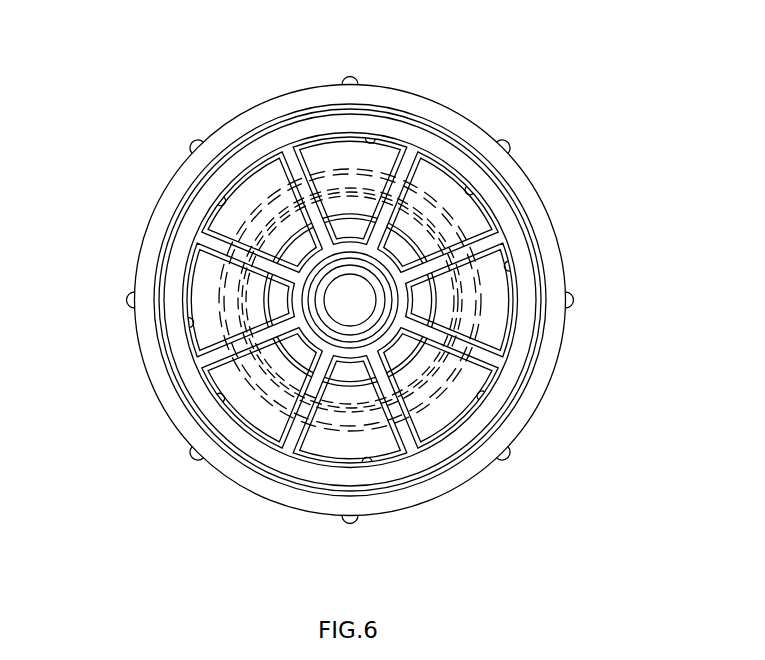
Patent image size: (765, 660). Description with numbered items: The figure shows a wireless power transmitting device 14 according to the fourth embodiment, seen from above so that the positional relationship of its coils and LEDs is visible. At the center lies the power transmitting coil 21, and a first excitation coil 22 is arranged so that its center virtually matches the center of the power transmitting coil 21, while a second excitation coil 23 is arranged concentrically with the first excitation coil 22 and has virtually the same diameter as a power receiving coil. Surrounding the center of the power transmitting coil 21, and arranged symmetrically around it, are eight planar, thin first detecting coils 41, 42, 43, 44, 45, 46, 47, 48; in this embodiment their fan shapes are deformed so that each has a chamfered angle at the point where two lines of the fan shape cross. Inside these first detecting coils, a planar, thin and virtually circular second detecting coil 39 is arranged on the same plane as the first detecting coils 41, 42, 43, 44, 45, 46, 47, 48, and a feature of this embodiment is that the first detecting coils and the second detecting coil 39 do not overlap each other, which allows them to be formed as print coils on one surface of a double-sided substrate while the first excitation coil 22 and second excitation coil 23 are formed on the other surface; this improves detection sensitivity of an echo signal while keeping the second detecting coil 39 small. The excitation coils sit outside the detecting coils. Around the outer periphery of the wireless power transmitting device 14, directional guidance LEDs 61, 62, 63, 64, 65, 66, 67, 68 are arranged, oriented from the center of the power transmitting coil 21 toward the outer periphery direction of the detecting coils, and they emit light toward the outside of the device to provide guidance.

The wireless power transmitting device 14 is at (525, 86).
The power transmitting coil 21 is at (460, 317).
The first excitation coil 22 is at (530, 384).
The second excitation coil 23 is at (290, 345).
The second detecting coil 39 is at (372, 327).
The first detecting coil 41 is at (373, 144).
The first detecting coil 42 is at (468, 198).
The first detecting coil 43 is at (507, 267).
The first detecting coil 44 is at (480, 396).
The first detecting coil 45 is at (369, 455).
The first detecting coil 46 is at (225, 392).
The first detecting coil 47 is at (190, 323).
The first detecting coil 48 is at (222, 203).
The directional guidance LED 61 is at (343, 525).
The directional guidance LED 62 is at (191, 462).
The directional guidance LED 63 is at (125, 298).
The directional guidance LED 64 is at (190, 140).
The directional guidance LED 65 is at (358, 76).
The directional guidance LED 66 is at (510, 140).
The directional guidance LED 67 is at (576, 297).
The directional guidance LED 68 is at (508, 462).